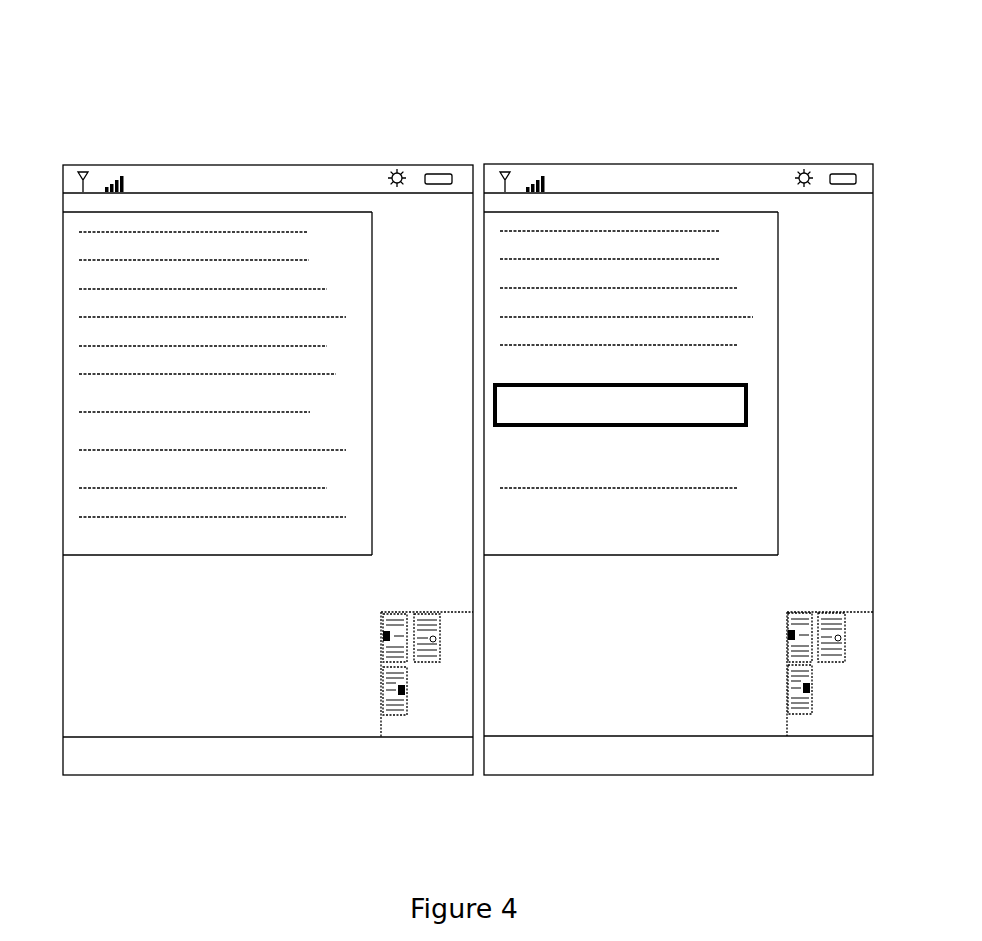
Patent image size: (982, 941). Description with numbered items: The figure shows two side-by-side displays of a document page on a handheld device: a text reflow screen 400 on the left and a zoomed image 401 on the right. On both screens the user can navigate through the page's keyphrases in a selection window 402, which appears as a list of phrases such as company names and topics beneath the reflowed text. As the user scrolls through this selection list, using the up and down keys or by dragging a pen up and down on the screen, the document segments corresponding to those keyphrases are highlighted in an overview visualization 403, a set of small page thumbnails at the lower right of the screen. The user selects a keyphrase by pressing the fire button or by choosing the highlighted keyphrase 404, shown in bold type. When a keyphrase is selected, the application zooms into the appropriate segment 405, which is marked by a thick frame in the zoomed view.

The text reflow screen 400 is at (434, 163).
The zoomed image 401 is at (730, 625).
The selection window 402 is at (520, 703).
The overview visualization 403 is at (395, 685).
The highlighted keyphrase 404 is at (582, 672).
The segment 405 is at (731, 390).